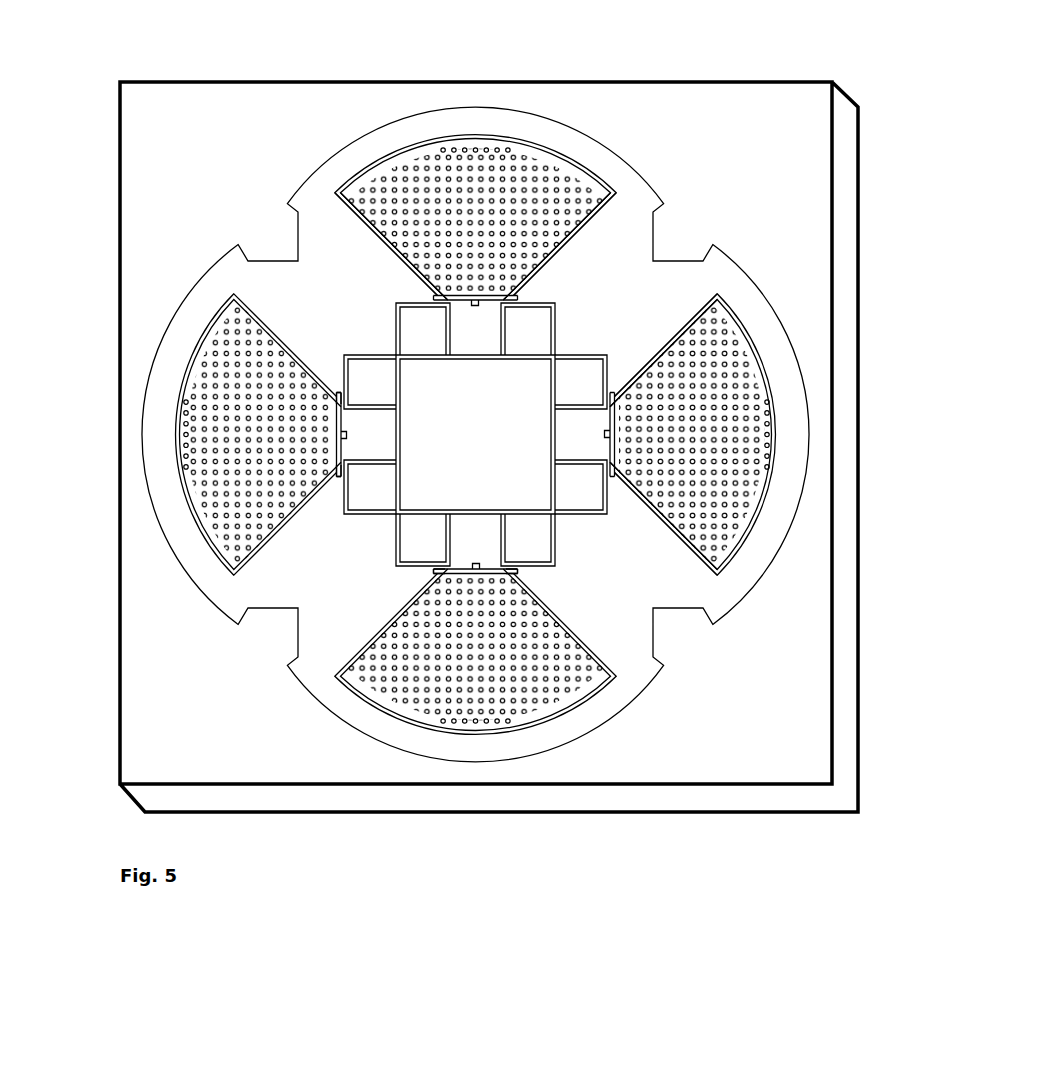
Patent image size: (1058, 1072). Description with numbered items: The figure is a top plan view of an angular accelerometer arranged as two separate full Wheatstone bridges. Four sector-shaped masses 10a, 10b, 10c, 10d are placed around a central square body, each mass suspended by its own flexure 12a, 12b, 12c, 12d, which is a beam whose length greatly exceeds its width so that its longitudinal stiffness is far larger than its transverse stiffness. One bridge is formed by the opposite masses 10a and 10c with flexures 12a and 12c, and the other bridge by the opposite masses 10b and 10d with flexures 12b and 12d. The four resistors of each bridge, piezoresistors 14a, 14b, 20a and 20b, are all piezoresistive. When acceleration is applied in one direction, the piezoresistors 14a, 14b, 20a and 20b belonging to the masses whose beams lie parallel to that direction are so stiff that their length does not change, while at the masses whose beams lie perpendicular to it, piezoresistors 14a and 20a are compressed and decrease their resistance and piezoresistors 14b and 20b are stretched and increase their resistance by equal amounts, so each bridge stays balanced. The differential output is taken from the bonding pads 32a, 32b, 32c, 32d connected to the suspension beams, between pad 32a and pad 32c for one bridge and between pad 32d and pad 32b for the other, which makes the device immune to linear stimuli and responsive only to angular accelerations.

The mass 10a is at (476, 167).
The mass 10b is at (753, 467).
The mass 10c is at (500, 705).
The mass 10d is at (208, 378).
The flexure 12a is at (470, 333).
The flexure 12b is at (613, 433).
The flexure 12c is at (487, 533).
The flexure 12d is at (340, 437).
The piezoresistor 14a is at (580, 240).
The piezoresistor 14b is at (430, 295).
The piezoresistor 20a is at (339, 378).
The piezoresistor 20b is at (337, 477).
The bonding pad 32a is at (500, 297).
The bonding pad 32b is at (583, 427).
The bonding pad 32c is at (480, 567).
The bonding pad 32d is at (356, 462).